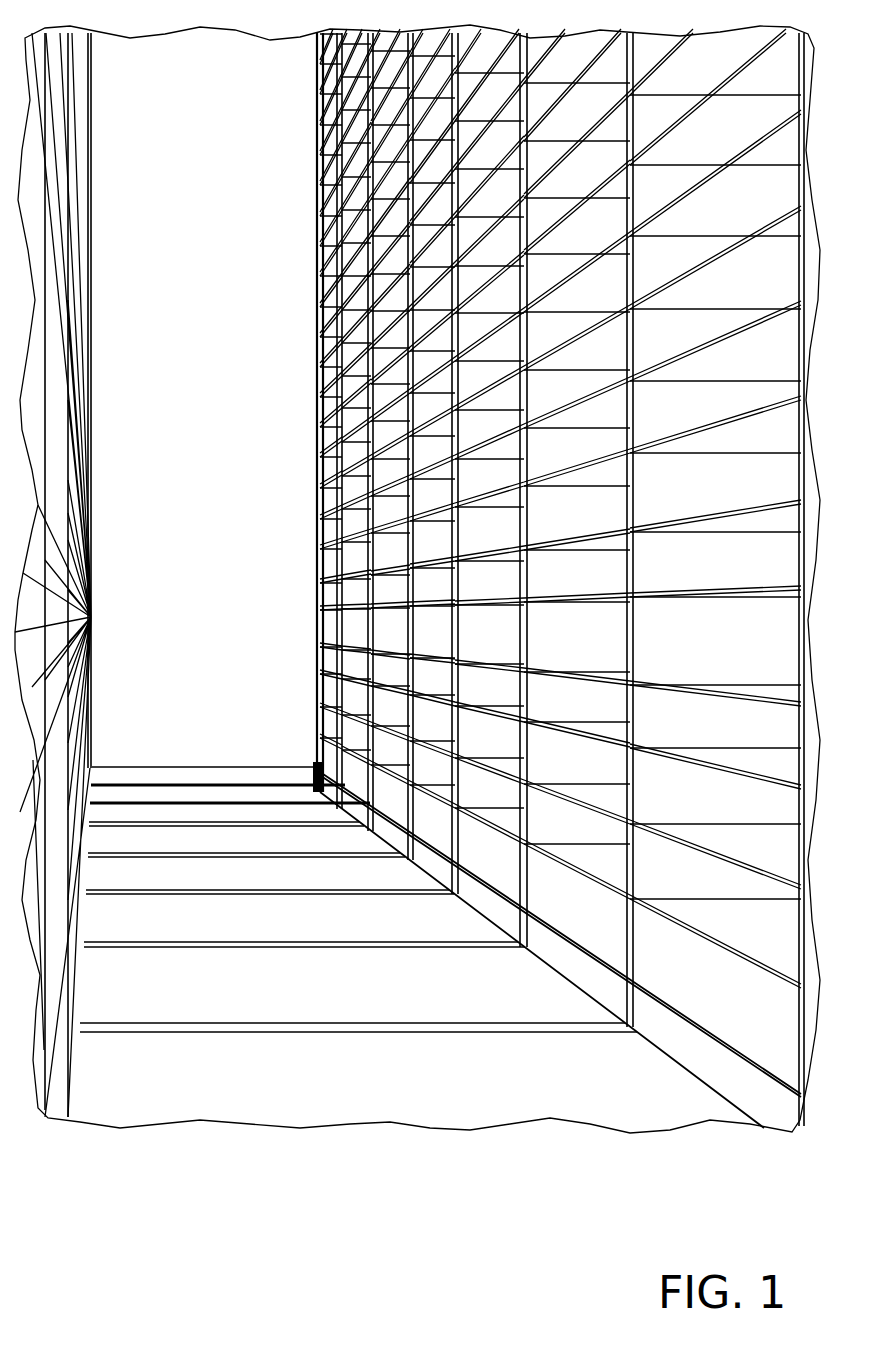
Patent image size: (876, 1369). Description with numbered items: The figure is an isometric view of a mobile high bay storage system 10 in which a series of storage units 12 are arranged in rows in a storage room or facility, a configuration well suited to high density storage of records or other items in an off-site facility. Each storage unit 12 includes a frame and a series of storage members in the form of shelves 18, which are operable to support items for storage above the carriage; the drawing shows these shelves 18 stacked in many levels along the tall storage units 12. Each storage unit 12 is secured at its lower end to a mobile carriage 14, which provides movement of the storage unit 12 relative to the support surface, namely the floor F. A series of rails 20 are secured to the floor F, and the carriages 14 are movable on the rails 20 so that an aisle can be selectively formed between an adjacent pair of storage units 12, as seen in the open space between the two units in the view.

The mobile high bay storage system 10 is at (260, 305).
The storage unit 12 is at (314, 210).
The mobile carriage 14 is at (432, 859).
The shelf 18 is at (537, 598).
The rail 20 is at (180, 887).
The floor F is at (419, 1089).